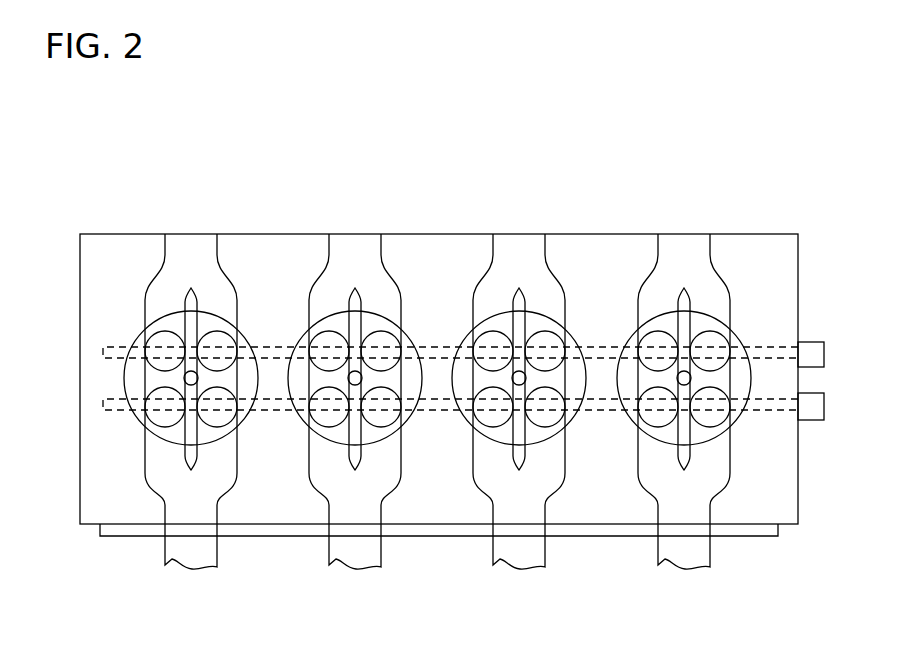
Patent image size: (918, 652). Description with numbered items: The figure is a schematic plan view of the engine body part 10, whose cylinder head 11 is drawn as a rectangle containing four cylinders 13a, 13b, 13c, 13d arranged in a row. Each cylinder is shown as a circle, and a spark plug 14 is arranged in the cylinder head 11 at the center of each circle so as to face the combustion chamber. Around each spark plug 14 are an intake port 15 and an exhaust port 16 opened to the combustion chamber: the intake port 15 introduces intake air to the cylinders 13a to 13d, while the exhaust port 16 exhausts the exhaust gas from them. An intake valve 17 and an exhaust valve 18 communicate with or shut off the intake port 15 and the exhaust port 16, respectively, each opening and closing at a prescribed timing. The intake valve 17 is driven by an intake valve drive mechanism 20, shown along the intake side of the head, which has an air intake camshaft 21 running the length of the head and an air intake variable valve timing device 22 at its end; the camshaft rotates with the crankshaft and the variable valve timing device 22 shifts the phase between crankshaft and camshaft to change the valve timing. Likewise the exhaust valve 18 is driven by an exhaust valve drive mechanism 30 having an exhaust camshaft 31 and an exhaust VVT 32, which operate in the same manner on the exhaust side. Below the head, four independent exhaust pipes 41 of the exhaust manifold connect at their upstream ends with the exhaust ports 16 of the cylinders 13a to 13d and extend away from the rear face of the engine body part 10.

The engine body part 10 is at (770, 199).
The cylinder head 11 is at (595, 513).
The cylinder 13a is at (186, 218).
The cylinder 13b is at (351, 218).
The cylinder 13c is at (522, 218).
The cylinder 13d is at (687, 218).
The spark plug 14 is at (183, 380).
The intake port 15 is at (218, 287).
The exhaust port 16 is at (218, 472).
The intake valve 17 is at (218, 338).
The exhaust valve 18 is at (218, 418).
The intake valve drive mechanism 20 is at (489, 299).
The air intake camshaft 21 is at (763, 350).
The air intake variable valve timing 22 is at (812, 340).
The exhaust valve drive mechanism 30 is at (490, 462).
The exhaust camshaft 31 is at (765, 410).
The exhaust VVT 32 is at (812, 413).
The independent exhaust pipe 41 is at (186, 552).